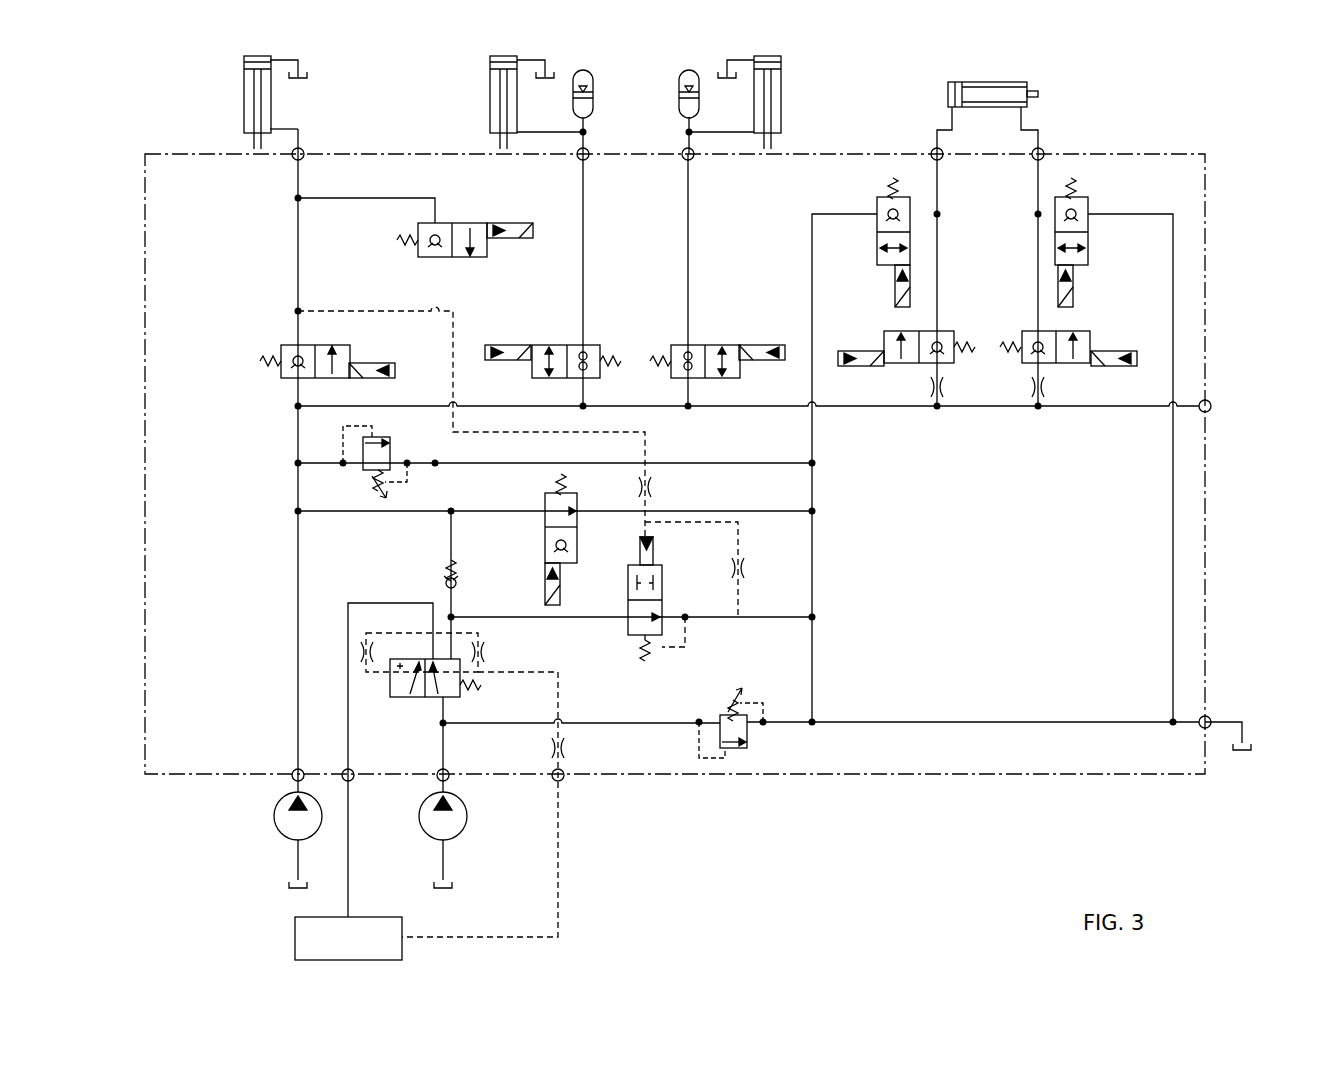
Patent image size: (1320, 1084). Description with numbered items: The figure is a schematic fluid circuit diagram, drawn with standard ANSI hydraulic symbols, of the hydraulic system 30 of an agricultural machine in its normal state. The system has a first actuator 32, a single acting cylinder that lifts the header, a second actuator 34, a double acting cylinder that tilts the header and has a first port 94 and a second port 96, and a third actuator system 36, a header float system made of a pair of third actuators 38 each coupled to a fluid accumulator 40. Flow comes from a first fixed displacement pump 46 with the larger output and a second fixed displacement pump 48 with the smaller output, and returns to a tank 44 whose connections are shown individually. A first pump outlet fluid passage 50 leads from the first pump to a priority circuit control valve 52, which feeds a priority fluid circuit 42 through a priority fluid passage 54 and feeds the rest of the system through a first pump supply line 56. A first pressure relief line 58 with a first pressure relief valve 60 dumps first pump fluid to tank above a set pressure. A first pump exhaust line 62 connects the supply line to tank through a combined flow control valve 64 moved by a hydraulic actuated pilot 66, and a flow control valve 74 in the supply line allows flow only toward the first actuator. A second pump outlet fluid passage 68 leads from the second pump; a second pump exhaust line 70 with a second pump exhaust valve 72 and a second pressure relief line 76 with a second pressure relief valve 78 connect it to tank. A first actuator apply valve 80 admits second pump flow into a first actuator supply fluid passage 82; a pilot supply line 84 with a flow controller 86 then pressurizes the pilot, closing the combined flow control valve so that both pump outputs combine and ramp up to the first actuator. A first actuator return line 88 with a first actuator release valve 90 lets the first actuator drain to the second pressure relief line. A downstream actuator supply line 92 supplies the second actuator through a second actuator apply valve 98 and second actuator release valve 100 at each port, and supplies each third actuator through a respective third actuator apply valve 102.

The hydraulic system 30 is at (840, 895).
The first actuator 32 is at (244, 106).
The second actuator 34 is at (981, 82).
The third actuator system 36 is at (635, 98).
The third actuators 38 is at (490, 106).
The fluid accumulator 40 is at (593, 116).
The priority fluid circuit 42 is at (362, 951).
The tank 44 is at (308, 83).
The first fixed displacement pump 46 is at (467, 828).
The second fixed displacement pump 48 is at (275, 833).
The first pump outlet fluid passage 50 is at (443, 723).
The priority circuit control valve 52 is at (408, 699).
The priority fluid passage 54 is at (348, 752).
The first pump supply line 56 is at (451, 601).
The first pressure relief line 58 is at (780, 720).
The first pressure relief valve 60 is at (750, 752).
The first pump exhaust line 62 is at (550, 620).
The combined flow control valve 64 is at (642, 645).
The hydraulic actuated pilot 66 is at (656, 546).
The second pump outlet fluid passage 68 is at (297, 687).
The second pump exhaust line 70 is at (350, 511).
The second pump exhaust valve 72 is at (545, 547).
The flow control valve 74 is at (457, 585).
The second pressure relief line 76 is at (465, 466).
The second pressure relief valve 78 is at (375, 437).
The first actuator apply valve 80 is at (343, 345).
The first actuator supply fluid passage 82 is at (297, 264).
The pilot supply line 84 is at (465, 322).
The flow controller 86 is at (660, 488).
The first actuator return line 88 is at (335, 200).
The first actuator release valve 90 is at (448, 221).
The downstream actuator supply line 92 is at (705, 410).
The first port 94 is at (937, 117).
The second port 96 is at (1038, 112).
The second actuator apply valve 98 is at (897, 366).
The second actuator release valve 100 is at (877, 252).
The third actuator apply valve 102 is at (560, 344).